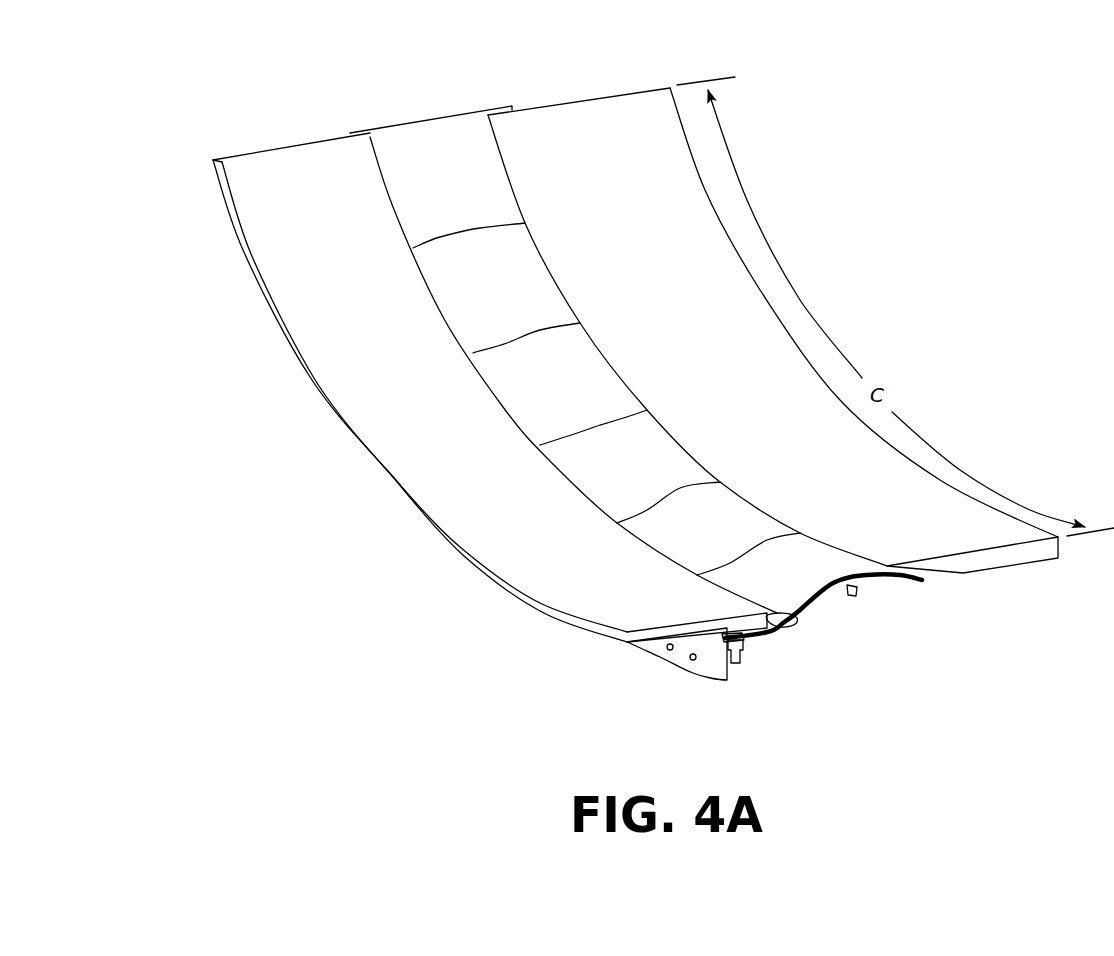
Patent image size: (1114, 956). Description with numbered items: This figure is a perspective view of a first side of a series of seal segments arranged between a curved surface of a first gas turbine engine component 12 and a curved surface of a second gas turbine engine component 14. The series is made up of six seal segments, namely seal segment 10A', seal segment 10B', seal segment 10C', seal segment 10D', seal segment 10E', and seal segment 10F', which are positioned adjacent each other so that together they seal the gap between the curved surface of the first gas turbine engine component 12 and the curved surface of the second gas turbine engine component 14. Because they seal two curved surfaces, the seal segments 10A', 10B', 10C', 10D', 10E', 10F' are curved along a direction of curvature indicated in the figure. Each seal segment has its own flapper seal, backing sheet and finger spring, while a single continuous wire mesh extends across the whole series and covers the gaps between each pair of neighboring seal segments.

The first gas turbine engine component 12 is at (277, 187).
The second gas turbine engine component 14 is at (592, 133).
The seal segment 10A' is at (280, 258).
The seal segment 10B' is at (334, 365).
The seal segment 10C' is at (401, 466).
The seal segment 10D' is at (499, 557).
The seal segment 10E' is at (565, 607).
The seal segment 10F' is at (641, 659).